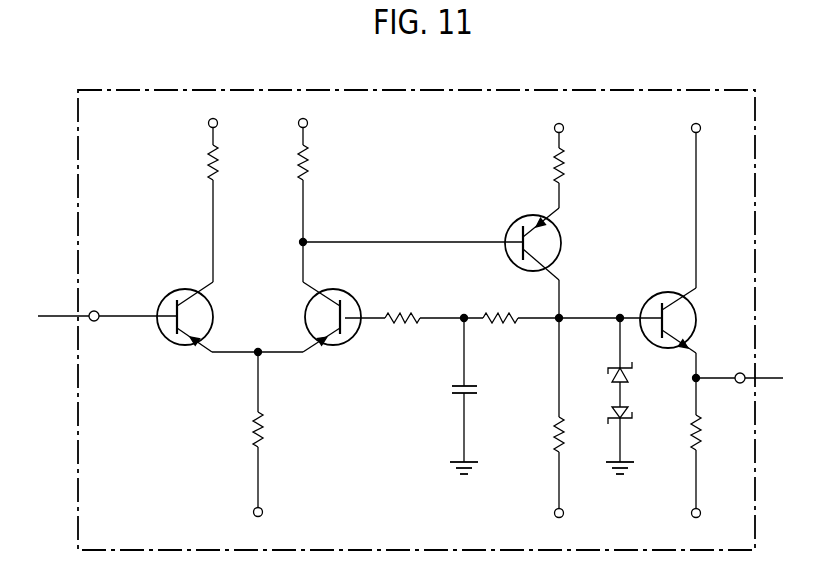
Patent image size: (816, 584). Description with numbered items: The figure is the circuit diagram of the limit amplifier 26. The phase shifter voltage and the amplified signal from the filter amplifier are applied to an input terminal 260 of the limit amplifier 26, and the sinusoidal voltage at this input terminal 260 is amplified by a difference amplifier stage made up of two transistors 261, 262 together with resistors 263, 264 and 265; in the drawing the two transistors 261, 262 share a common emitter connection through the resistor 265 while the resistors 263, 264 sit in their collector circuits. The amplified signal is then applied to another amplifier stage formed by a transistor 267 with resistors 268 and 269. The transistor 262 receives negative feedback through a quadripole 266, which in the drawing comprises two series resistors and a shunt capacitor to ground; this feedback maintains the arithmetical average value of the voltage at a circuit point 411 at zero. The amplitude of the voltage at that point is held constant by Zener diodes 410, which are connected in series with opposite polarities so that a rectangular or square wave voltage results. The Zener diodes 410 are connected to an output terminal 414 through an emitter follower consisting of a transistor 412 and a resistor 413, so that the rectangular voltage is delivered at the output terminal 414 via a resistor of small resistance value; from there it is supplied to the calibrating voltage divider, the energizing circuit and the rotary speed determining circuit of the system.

The limit amplifier 26 is at (426, 542).
The input terminal 260 is at (108, 302).
The difference amplifier stage transistor 261 is at (191, 291).
The transistor 262 is at (363, 287).
The difference amplifier stage resistor 263 is at (208, 155).
The difference amplifier stage resistor 264 is at (308, 156).
The difference amplifier stage resistor 265 is at (255, 427).
The quadripole 266 is at (498, 325).
The amplifier stage transistor 267 is at (562, 242).
The amplifier stage resistor 268 is at (566, 162).
The amplifier stage resistor 269 is at (557, 438).
The Zener diodes 410 is at (627, 375).
The circuit point 411 is at (562, 316).
The emitter follower transistor 412 is at (656, 295).
The emitter follower resistor 413 is at (700, 440).
The output terminal 414 is at (736, 374).